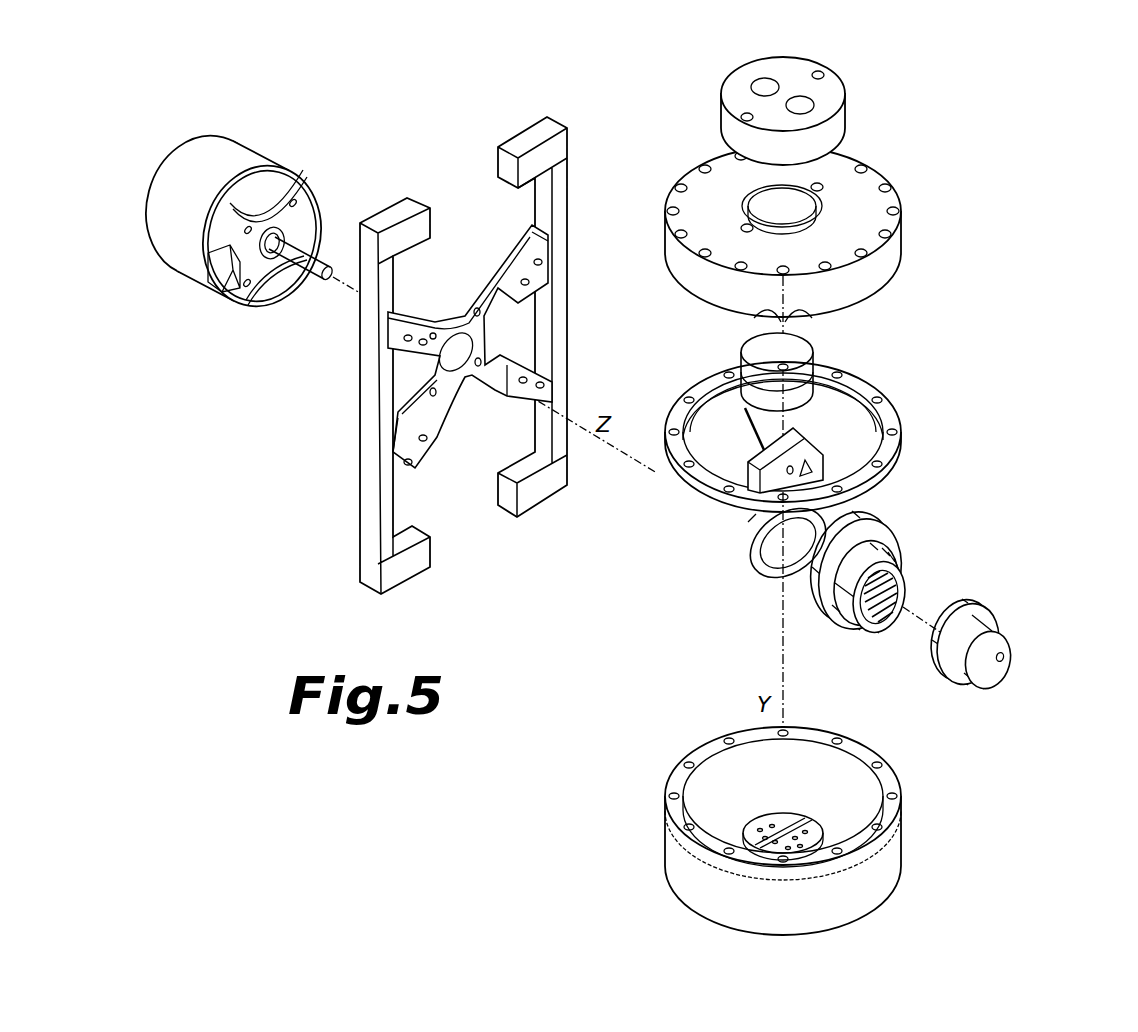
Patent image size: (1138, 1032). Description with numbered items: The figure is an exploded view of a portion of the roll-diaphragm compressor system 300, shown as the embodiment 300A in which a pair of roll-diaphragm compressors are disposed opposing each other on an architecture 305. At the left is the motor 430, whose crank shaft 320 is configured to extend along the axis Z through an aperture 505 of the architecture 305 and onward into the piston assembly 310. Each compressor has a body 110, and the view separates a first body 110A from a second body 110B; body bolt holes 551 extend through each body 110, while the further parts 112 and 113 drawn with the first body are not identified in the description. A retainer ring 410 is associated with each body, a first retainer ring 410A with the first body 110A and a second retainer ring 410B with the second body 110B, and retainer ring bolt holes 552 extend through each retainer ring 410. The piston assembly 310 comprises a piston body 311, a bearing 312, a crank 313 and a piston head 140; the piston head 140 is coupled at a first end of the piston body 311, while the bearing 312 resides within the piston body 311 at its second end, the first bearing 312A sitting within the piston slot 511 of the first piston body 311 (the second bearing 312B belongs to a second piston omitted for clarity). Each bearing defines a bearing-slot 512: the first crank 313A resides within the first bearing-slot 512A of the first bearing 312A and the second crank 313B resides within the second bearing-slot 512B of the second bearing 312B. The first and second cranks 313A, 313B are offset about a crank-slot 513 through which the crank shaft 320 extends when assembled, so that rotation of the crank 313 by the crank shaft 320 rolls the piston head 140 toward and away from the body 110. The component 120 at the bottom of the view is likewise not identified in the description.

The roll-diaphragm compressor system 300 is at (216, 198).
The embodiment 300A is at (260, 180).
The motor 430 is at (172, 275).
The crank shaft 320 is at (305, 275).
The architecture 305 is at (358, 425).
The aperture 505 is at (462, 322).
The body 110 is at (828, 165).
The first body 110A is at (905, 190).
The second body 110B is at (903, 842).
The top cap 112 is at (780, 89).
The cap opening 113 is at (752, 84).
The body bolt holes 551 is at (865, 158).
The piston head 140 is at (822, 368).
The retainer ring 410 is at (737, 435).
The first retainer ring 410A is at (668, 450).
The second retainer ring 410B is at (703, 750).
The ring bolt holes 552 is at (690, 385).
The piston slot 511 is at (727, 530).
The piston body 311 is at (757, 550).
The piston assembly 310 is at (920, 601).
The bearing 312 is at (864, 595).
The first bearing 312A is at (885, 530).
The second bearing 312B is at (834, 612).
The bearing bore 512 is at (888, 637).
The first bearing-slot 512A is at (907, 553).
The second bearing-slot 512B is at (912, 588).
The crank 313 is at (1014, 651).
The first crank 313A is at (1005, 620).
The second crank 313B is at (993, 684).
The crank-slot 513 is at (1008, 658).
The base housing 120 is at (784, 807).